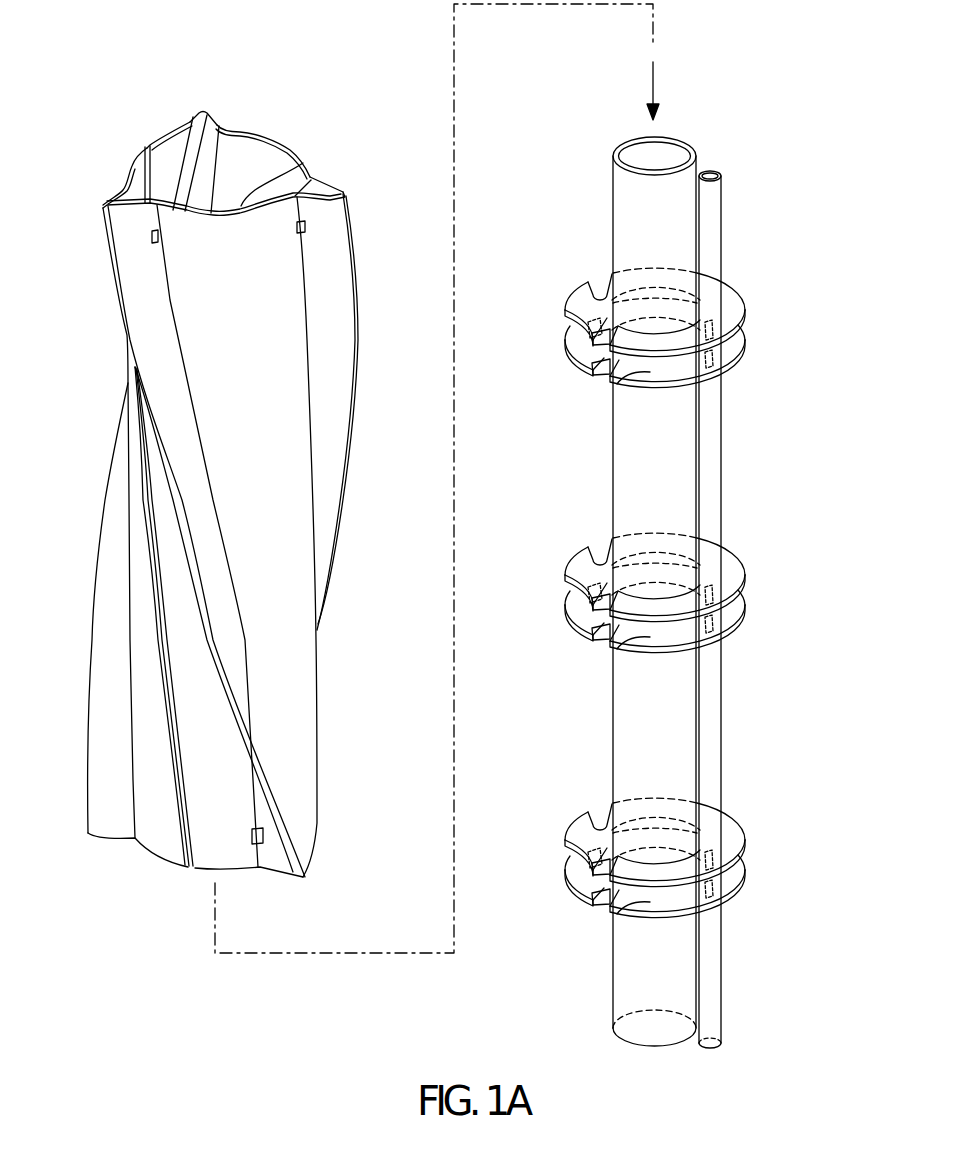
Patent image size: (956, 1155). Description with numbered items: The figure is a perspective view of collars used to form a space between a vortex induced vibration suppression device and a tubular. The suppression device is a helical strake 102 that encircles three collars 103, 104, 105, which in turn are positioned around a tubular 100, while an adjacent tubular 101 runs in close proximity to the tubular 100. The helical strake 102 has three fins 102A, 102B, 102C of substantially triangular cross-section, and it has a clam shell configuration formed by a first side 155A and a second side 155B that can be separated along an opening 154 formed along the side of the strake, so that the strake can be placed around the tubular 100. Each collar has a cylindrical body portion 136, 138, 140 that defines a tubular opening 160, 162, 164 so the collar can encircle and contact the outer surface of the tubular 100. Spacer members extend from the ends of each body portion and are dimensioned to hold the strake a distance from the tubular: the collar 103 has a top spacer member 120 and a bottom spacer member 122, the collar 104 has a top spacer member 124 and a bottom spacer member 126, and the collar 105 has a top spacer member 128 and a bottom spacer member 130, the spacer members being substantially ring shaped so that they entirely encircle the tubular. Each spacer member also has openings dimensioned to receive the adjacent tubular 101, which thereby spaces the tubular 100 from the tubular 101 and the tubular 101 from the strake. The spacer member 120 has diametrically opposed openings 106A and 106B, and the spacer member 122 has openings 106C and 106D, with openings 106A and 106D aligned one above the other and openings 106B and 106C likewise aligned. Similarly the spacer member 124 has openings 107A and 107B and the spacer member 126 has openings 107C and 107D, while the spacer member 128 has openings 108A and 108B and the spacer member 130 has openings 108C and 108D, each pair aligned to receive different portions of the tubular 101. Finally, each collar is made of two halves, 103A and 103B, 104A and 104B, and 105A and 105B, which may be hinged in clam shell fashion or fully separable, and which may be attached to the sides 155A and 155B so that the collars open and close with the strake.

The tubular 100 is at (622, 190).
The adjacent tubular 101 is at (720, 190).
The helical strake 102 is at (226, 272).
The fin 102A is at (345, 222).
The fin 102B is at (102, 225).
The fin 102C is at (208, 110).
The opening 154 is at (145, 145).
The first side 155A is at (268, 132).
The second side 155B is at (303, 163).
The collar 103 is at (556, 310).
The half 103A is at (557, 365).
The half 103B is at (758, 298).
The collar 104 is at (556, 575).
The half 104A is at (557, 630).
The half 104B is at (758, 563).
The collar 105 is at (556, 840).
The half 105A is at (557, 895).
The half 105B is at (758, 828).
The opening 106A is at (600, 284).
The opening 106B is at (745, 338).
The opening 106C is at (730, 374).
The opening 106D is at (568, 346).
The opening 107A is at (600, 549).
The opening 107B is at (745, 603).
The opening 107C is at (730, 639).
The opening 107D is at (568, 611).
The opening 108A is at (600, 814).
The opening 108B is at (745, 868).
The opening 108C is at (730, 904).
The opening 108D is at (568, 876).
The top spacer member 120 is at (735, 282).
The bottom spacer member 122 is at (640, 376).
The top spacer member 124 is at (735, 547).
The bottom spacer member 126 is at (640, 641).
The top spacer member 128 is at (735, 812).
The bottom spacer member 130 is at (640, 906).
The cylindrical body portion 136 is at (660, 357).
The cylindrical body portion 138 is at (660, 622).
The cylindrical body portion 140 is at (660, 887).
The tubular opening 160 is at (663, 302).
The tubular opening 162 is at (663, 567).
The tubular opening 164 is at (663, 832).